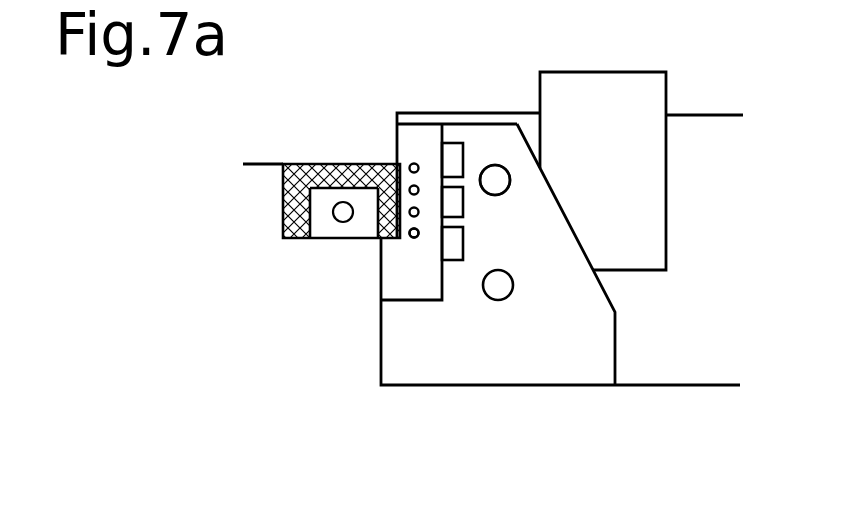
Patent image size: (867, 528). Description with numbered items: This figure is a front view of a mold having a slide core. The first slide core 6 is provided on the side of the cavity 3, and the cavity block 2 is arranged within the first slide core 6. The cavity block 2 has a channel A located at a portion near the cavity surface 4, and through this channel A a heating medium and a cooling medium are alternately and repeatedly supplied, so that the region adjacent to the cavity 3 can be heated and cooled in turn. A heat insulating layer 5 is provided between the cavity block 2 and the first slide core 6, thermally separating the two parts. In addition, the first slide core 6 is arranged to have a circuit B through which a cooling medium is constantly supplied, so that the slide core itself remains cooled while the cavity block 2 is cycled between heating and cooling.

The cavity block 2 is at (417, 287).
The cavity 3 is at (287, 164).
The cavity surface 4 is at (410, 240).
The heat insulating layer 5 is at (448, 157).
The first slide core 6 is at (568, 347).
The channel A is at (409, 241).
The circuit B is at (495, 165).